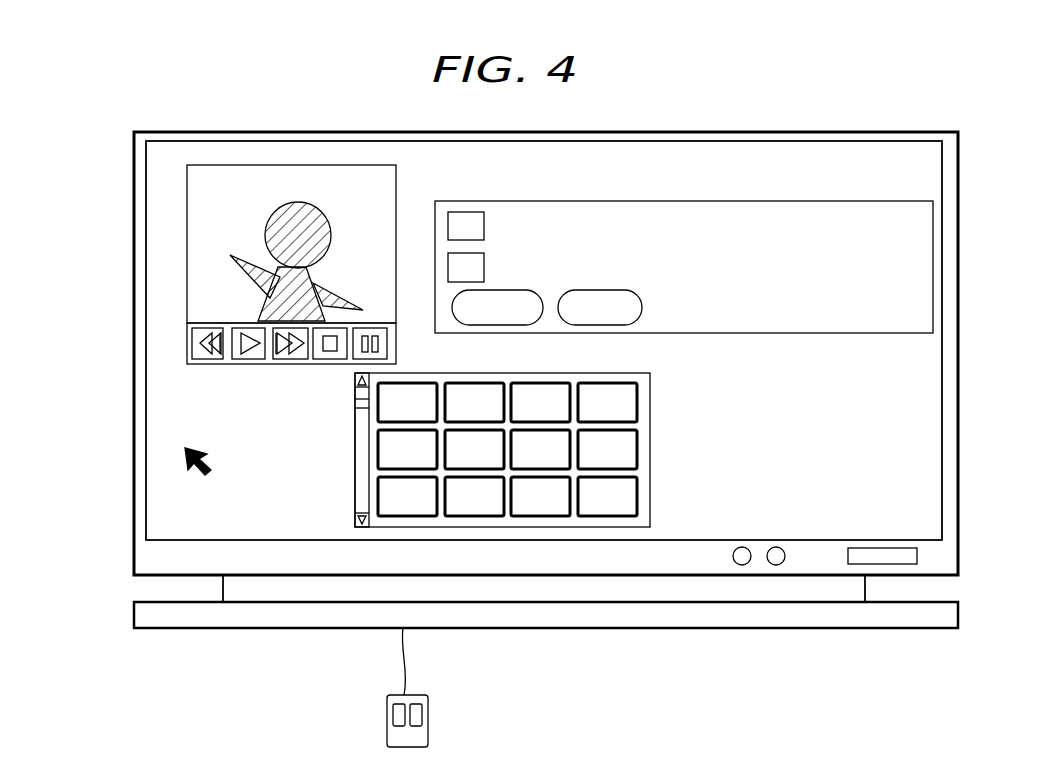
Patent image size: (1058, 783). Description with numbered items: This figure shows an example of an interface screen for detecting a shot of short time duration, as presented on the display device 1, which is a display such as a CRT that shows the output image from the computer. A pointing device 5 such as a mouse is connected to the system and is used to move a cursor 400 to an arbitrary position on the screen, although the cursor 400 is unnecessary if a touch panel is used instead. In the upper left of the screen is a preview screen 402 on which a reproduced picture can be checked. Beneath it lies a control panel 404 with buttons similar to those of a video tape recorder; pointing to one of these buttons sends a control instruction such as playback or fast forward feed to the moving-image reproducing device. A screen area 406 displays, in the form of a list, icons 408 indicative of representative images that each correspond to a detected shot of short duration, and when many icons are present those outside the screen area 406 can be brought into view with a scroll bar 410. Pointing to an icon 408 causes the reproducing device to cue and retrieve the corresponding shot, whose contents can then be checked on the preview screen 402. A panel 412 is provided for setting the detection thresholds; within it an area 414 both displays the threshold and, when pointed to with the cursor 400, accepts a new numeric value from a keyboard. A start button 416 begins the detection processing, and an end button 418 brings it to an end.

The display device 1 is at (930, 577).
The pointing device 5 is at (430, 700).
The cursor 400 is at (190, 466).
The preview screen 402 is at (197, 214).
The control panel 404 is at (193, 343).
The screen area 406 is at (651, 380).
The icons 408 is at (634, 451).
The scroll bar 410 is at (355, 394).
The panel 412 is at (838, 202).
The area 414 is at (467, 208).
The start button 416 is at (523, 328).
The end button 418 is at (627, 328).